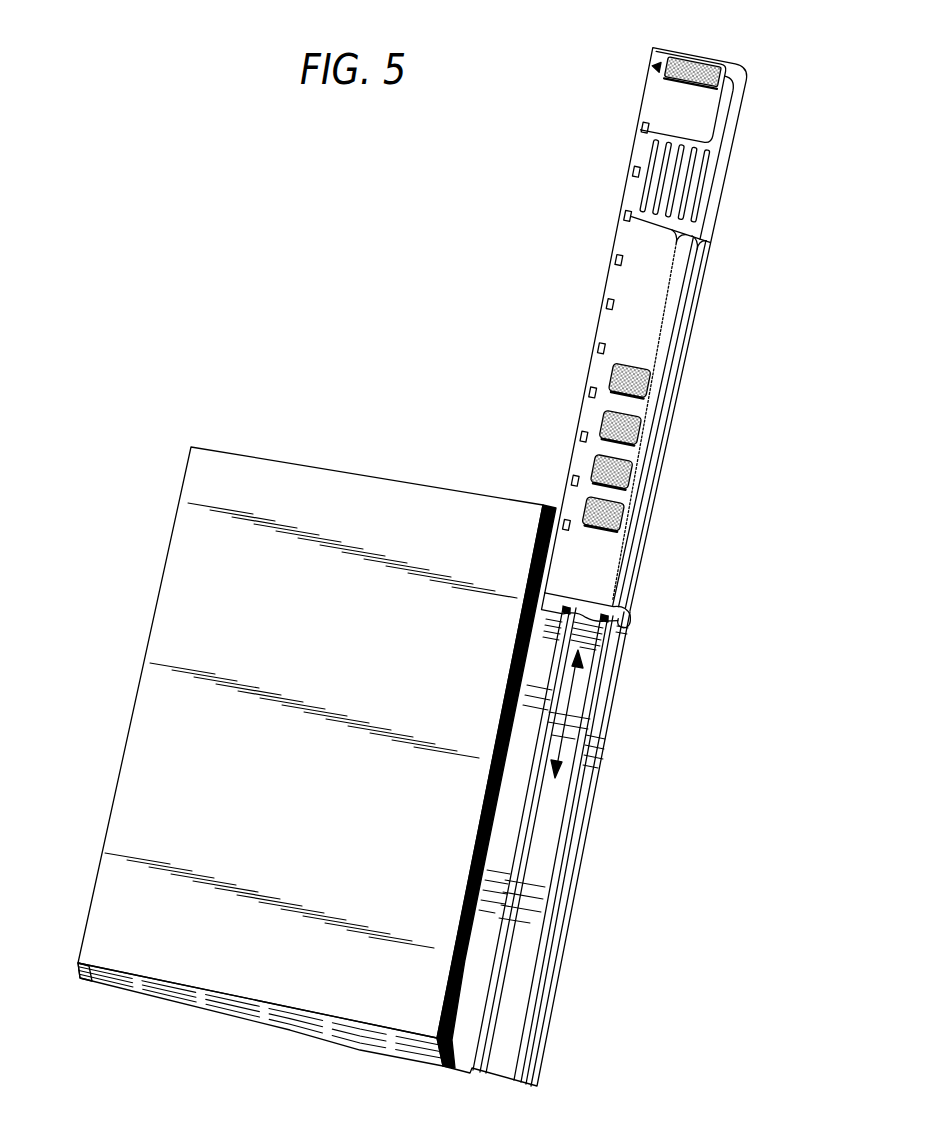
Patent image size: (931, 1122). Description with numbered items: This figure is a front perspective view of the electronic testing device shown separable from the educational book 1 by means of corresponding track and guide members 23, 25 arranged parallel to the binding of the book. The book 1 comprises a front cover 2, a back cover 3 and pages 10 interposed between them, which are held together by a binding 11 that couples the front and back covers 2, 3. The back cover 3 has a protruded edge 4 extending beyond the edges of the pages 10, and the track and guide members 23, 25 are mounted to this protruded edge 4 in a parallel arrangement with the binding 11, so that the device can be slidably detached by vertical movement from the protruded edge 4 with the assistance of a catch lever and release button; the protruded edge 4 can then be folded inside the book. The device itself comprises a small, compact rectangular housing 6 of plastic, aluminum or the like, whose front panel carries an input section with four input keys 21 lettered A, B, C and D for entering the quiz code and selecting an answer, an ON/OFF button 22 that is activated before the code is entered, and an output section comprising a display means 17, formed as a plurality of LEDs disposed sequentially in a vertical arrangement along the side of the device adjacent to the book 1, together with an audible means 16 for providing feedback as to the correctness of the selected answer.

The educational book 1 is at (152, 527).
The front cover 2 is at (343, 645).
The back cover 3 is at (281, 1033).
The protruded edge 4 is at (526, 979).
The rectangular housing 6 is at (660, 332).
The pages 10 is at (142, 994).
The binding 11 is at (82, 978).
The audible means 16 is at (683, 193).
The display means 17 is at (623, 218).
The input keys 21 is at (618, 472).
The ON/OFF button 22 is at (692, 58).
The track member 23 is at (530, 811).
The guide member 25 is at (590, 623).